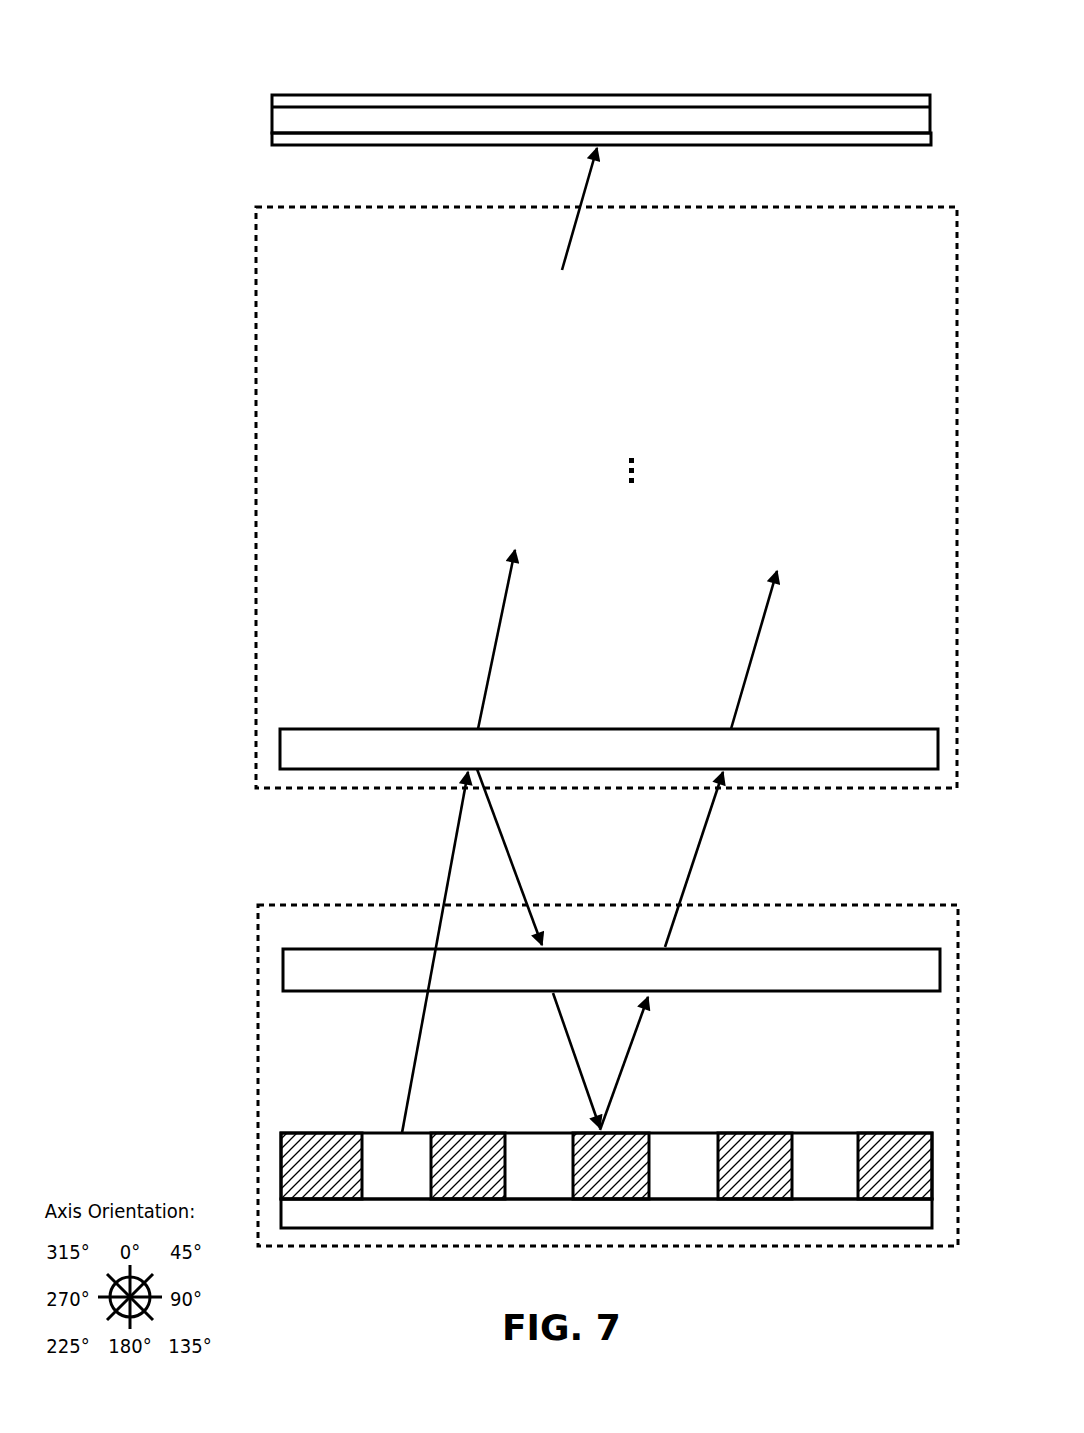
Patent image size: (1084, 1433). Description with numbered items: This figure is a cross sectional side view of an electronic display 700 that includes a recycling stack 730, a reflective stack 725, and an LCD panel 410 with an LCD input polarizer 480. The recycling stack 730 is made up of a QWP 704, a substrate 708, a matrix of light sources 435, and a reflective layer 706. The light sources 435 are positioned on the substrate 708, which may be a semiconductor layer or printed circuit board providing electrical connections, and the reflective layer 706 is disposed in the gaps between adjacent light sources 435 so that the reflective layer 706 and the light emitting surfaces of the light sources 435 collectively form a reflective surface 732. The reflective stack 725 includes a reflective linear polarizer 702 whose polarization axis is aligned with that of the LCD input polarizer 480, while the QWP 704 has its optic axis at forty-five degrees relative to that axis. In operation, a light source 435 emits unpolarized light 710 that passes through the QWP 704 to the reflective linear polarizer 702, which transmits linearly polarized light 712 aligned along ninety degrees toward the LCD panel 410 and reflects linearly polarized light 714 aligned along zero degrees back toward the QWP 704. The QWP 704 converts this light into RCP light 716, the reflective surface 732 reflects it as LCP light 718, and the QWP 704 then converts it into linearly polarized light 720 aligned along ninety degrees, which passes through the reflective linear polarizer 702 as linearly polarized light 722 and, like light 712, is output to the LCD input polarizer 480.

The electronic display 700 is at (499, 677).
The LCD panel 410 is at (272, 118).
The LCD input polarizer 480 is at (272, 140).
The reflective stack 725 is at (257, 490).
The reflective linear polarizer 702 is at (280, 743).
The linearly polarized light 712 is at (434, 639).
The linearly polarized light 722 is at (742, 678).
The linearly polarized light 714 is at (512, 877).
The linearly polarized light 720 is at (678, 886).
The recycling stack 730 is at (258, 1073).
The QWP 704 is at (283, 960).
The unpolarized light 710 is at (415, 1088).
The RCP light 716 is at (580, 1077).
The LCP light 718 is at (614, 1088).
The reflective layer 706 is at (295, 1163).
The reflective surface 732 is at (752, 1133).
The light sources 435 is at (406, 1178).
The substrate 708 is at (803, 1205).